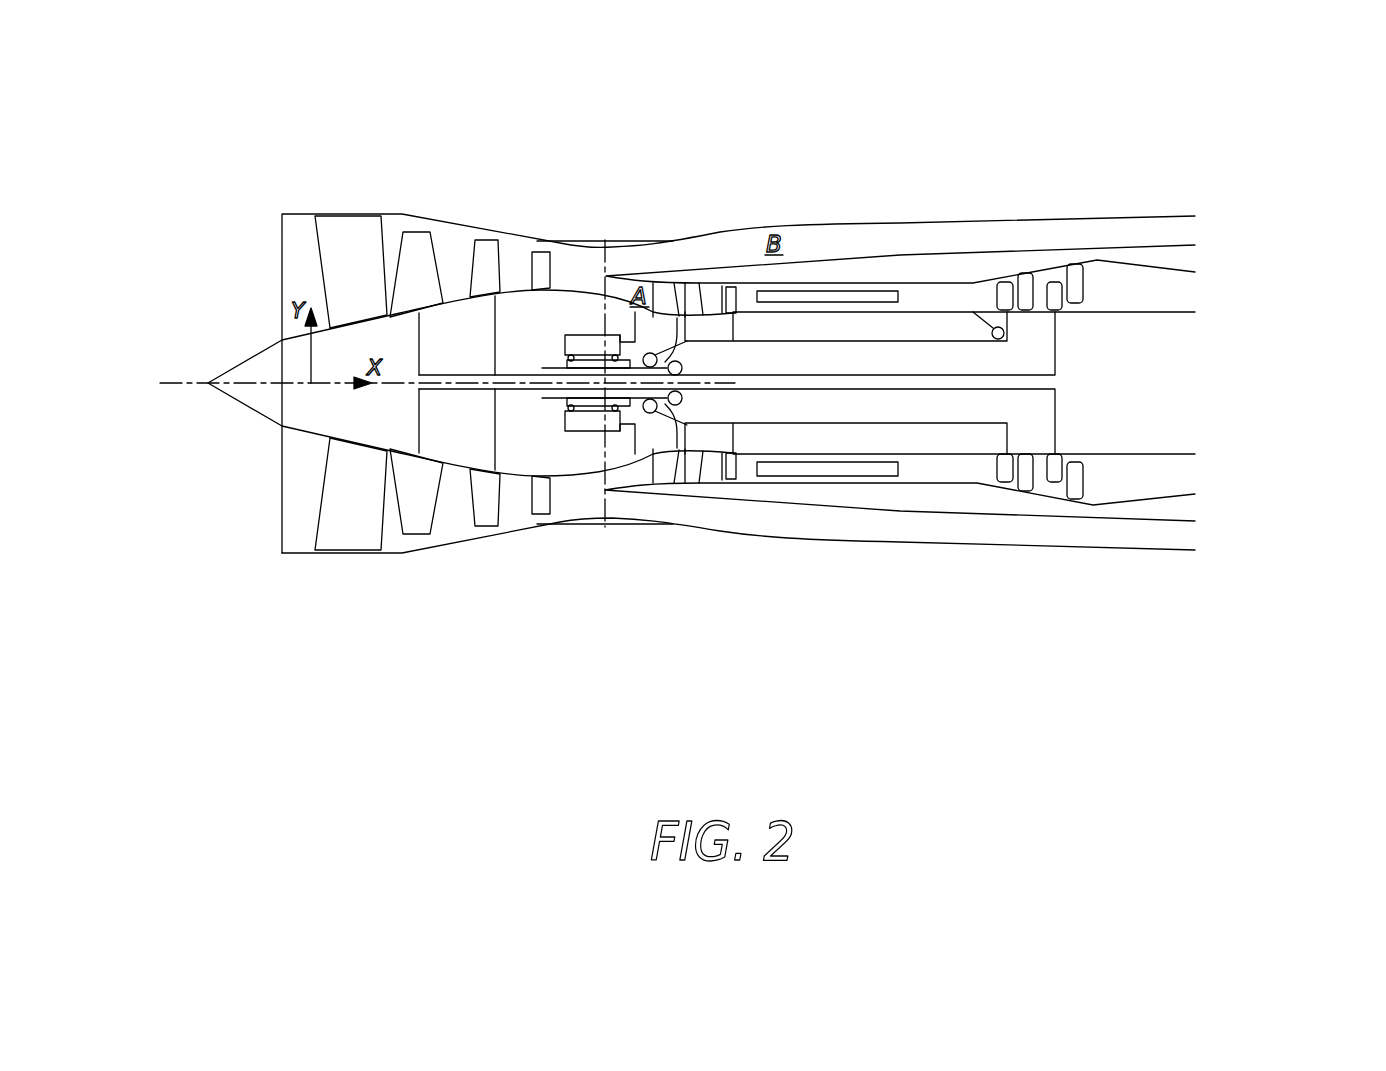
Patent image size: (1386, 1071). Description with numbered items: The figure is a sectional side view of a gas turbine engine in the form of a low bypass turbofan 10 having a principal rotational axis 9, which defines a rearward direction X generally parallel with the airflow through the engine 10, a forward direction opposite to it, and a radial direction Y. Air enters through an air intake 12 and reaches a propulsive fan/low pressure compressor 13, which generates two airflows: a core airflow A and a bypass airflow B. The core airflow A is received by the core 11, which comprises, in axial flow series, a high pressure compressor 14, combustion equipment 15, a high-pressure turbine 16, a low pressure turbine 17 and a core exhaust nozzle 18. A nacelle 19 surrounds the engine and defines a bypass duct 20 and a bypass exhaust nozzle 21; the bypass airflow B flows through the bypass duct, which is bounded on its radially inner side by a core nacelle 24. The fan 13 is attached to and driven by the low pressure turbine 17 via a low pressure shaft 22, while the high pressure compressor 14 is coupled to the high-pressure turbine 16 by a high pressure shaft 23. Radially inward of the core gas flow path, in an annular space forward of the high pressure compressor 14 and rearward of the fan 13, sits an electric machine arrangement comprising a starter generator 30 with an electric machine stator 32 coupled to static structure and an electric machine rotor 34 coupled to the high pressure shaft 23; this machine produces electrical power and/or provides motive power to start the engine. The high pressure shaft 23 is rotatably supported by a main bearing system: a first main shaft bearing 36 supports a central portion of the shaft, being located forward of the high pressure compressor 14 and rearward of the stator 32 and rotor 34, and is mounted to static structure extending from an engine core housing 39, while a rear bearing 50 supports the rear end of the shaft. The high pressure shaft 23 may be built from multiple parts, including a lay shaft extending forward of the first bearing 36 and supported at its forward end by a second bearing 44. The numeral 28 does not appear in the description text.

The principal rotational axis 9 is at (257, 383).
The low bypass turbofan 10 is at (772, 165).
The core 11 is at (717, 250).
The air intake 12 is at (282, 240).
The propulsive fan/low pressure compressor 13 is at (507, 552).
The high pressure compressor 14 is at (686, 518).
The combustion equipment 15 is at (850, 290).
The high-pressure turbine 16 is at (1003, 282).
The low pressure turbine 17 is at (1053, 281).
The core exhaust nozzle 18 is at (1183, 293).
The nacelle 19 is at (930, 222).
The bypass duct 20 is at (793, 515).
The bypass exhaust nozzle 21 is at (1175, 229).
The low pressure shaft 22 is at (822, 380).
The high pressure shaft 23 is at (940, 427).
The core nacelle 24 is at (1017, 518).
The fan shaft 28 is at (550, 412).
The starter generator 30 is at (568, 310).
The electric machine stator 32 is at (586, 334).
The electric machine rotor 34 is at (585, 407).
The first main shaft bearing 36 is at (653, 355).
The engine core housing 39 is at (635, 458).
The second bearing 44 is at (565, 358).
The rear bearing 50 is at (1013, 320).